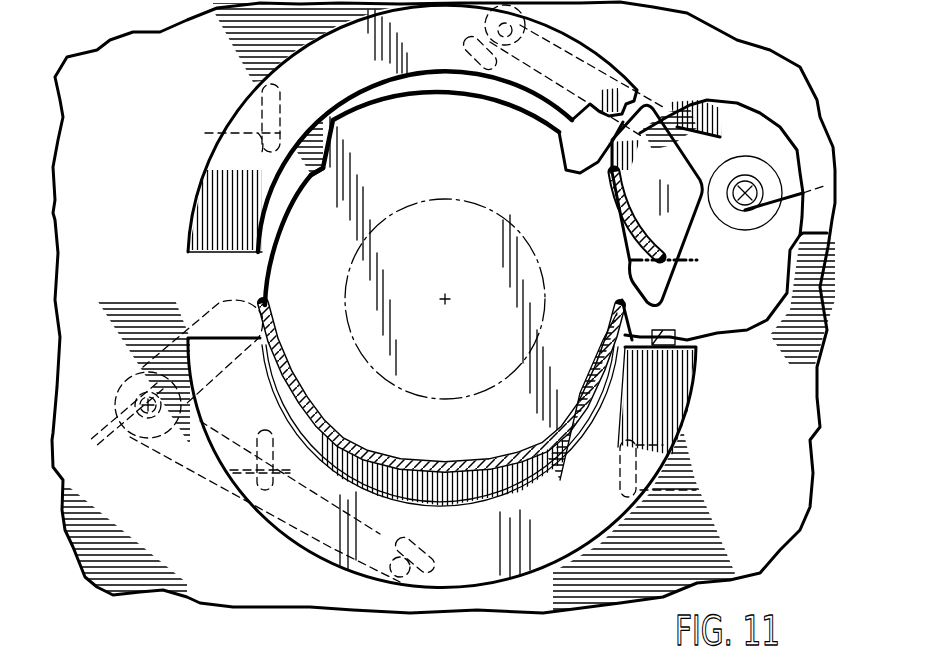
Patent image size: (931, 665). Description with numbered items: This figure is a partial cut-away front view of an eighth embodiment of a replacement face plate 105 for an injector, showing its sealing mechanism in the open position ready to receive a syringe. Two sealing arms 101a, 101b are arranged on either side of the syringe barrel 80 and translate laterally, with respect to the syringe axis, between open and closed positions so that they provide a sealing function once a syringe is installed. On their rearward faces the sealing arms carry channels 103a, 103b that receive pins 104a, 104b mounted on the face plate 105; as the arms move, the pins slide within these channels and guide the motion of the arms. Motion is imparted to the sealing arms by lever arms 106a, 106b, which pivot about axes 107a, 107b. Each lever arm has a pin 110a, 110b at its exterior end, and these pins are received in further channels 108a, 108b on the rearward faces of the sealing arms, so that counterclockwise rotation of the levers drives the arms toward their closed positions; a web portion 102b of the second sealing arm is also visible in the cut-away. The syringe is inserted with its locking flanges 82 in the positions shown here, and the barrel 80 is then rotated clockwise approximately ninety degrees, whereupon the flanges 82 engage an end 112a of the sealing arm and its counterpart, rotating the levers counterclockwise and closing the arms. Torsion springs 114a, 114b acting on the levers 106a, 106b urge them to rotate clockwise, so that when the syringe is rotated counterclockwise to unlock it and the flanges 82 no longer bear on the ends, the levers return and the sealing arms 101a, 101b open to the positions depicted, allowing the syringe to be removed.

The syringe barrel 80 is at (318, 431).
The locking flanges 82 is at (418, 483).
The sealing arm 101a is at (342, 74).
The sealing arm 101b is at (570, 542).
The shoe web 102b is at (261, 299).
The channel 103a is at (258, 118).
The channel 103b is at (233, 475).
The pin 104a is at (205, 133).
The pin 104b is at (262, 432).
The face plate 105 is at (684, 54).
The lever arm 106a is at (700, 100).
The lever arm 106b is at (220, 302).
The axis 107a is at (750, 240).
The axis 107b is at (100, 450).
The channel 108a is at (470, 49).
The channel 108b is at (430, 553).
The pin 110a is at (540, 22).
The pin 110b is at (420, 582).
The end 112a is at (633, 277).
The torsion spring 114a is at (827, 233).
The torsion spring 114b is at (124, 405).